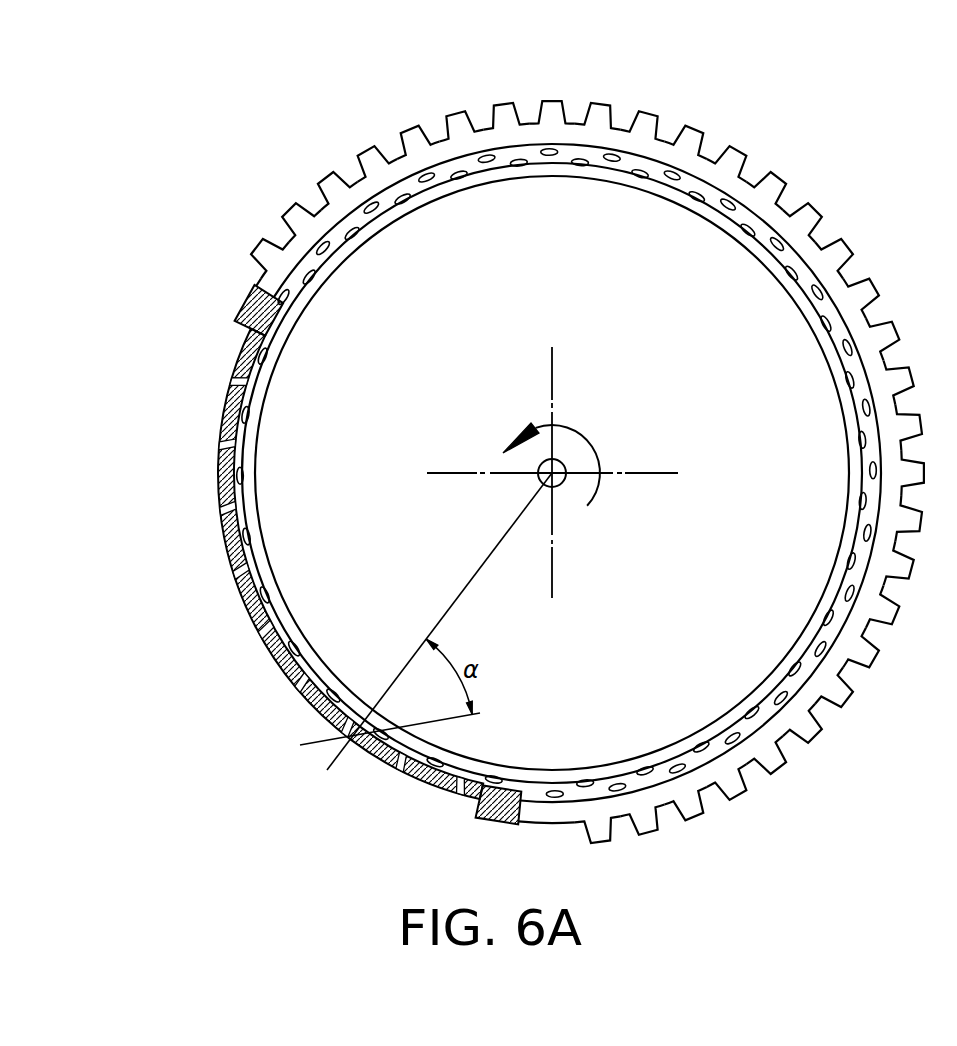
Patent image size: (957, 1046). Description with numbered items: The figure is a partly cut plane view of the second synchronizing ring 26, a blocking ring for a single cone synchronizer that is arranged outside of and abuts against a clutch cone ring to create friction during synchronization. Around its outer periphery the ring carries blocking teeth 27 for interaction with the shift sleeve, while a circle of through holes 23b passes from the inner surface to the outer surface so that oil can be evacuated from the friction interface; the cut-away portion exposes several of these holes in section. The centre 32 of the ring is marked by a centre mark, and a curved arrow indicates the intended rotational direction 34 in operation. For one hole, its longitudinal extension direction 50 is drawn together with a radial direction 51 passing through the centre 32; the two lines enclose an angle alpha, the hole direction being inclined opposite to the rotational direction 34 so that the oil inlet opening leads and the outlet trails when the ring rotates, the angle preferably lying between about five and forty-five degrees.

The second synchronizing ring 26 is at (544, 446).
The blocking teeth 27 is at (462, 123).
The through holes 23b is at (545, 148).
The centre 32 is at (563, 458).
The intended rotational direction 34 is at (587, 440).
The longitudinal extension direction 50 is at (302, 744).
The radial direction 51 is at (327, 770).